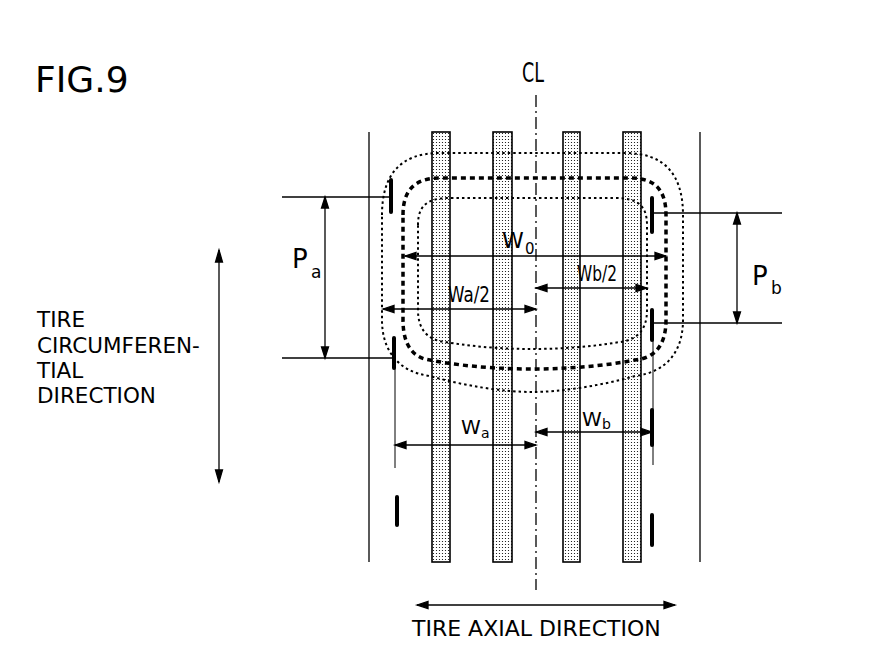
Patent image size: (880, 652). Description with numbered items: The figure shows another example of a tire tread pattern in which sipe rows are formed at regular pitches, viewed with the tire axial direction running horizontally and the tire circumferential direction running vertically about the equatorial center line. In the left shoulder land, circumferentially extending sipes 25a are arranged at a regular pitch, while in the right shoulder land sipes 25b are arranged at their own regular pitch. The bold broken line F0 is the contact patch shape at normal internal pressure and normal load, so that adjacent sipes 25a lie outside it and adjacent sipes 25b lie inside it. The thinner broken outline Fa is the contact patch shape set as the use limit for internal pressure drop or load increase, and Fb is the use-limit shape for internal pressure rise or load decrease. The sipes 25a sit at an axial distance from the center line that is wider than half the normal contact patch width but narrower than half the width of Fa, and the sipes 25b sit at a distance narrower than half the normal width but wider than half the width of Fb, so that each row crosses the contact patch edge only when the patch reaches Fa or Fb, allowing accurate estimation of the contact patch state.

The sipes 25a is at (388, 190).
The sipes 25b is at (655, 422).
The tire contact patch shape Fa is at (590, 153).
The contact patch shape region F0 is at (600, 178).
The tire contact patch shape Fb is at (602, 200).